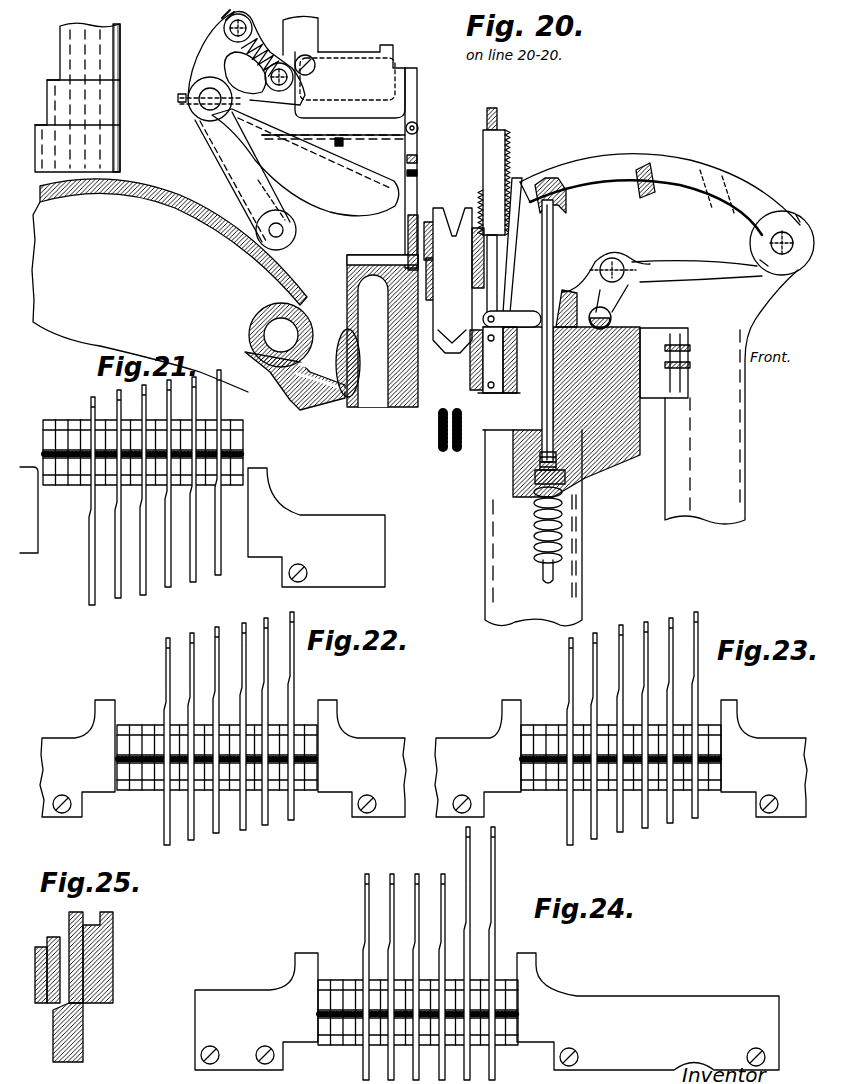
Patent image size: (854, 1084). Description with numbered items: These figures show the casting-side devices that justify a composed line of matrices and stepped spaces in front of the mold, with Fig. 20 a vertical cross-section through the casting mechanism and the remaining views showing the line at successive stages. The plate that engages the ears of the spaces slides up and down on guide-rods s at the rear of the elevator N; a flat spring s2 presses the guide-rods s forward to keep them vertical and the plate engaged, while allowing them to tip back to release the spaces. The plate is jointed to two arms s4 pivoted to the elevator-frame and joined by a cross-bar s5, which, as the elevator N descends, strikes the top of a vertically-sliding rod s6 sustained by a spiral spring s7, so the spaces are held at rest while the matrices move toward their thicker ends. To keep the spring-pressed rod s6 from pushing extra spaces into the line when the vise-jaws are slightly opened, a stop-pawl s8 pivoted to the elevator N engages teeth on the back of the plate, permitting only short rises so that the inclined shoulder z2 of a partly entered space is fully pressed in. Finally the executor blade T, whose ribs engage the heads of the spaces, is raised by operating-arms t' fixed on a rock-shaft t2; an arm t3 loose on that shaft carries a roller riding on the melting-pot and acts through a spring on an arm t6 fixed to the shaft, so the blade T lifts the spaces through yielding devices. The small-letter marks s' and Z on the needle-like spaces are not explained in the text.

In FIG. 20, the arm t6 is at (236, 57).
In FIG. 20, the rock-shaft t2 is at (190, 102).
In FIG. 20, the arm carrying a roller t3 is at (235, 176).
In FIG. 20, the operating-arms t' is at (305, 172).
In FIG. 20, the rising-and-falling blade T is at (412, 255).
In FIG. 20, the guide-rods s is at (473, 275).
In FIG. 20, the cross-bar s5 is at (557, 176).
In FIG. 20, the arms s4 is at (603, 170).
In FIG. 20, the stop-pawl s8 is at (517, 250).
In FIG. 20, the vertically-sliding rod s6 is at (600, 268).
In FIG. 20, the flat spring s2 is at (515, 365).
In FIG. 20, the screw s' is at (499, 403).
In FIG. 20, the spiral spring s7 is at (538, 515).
In FIG. 20, the elevator N is at (521, 448).
In FIG. 21, the needle Z is at (141, 487).
In FIG. 22, the needle Z is at (229, 734).
In FIG. 23, the needle Z is at (632, 734).
In FIG. 25, the needle Z is at (82, 952).
In FIG. 25, the inclined surface or shoulder z2 is at (60, 1010).